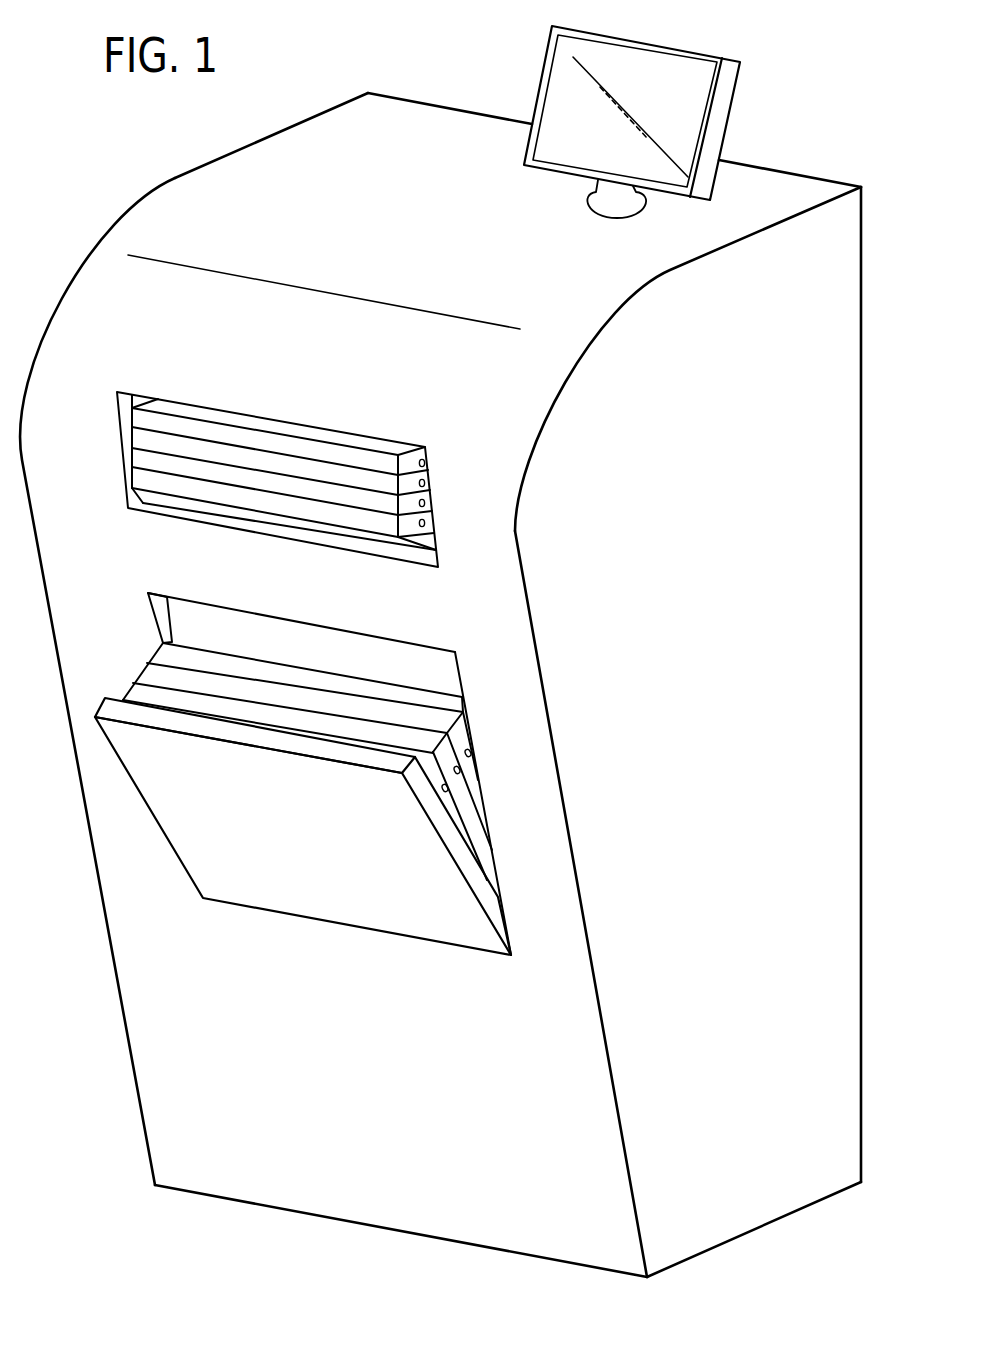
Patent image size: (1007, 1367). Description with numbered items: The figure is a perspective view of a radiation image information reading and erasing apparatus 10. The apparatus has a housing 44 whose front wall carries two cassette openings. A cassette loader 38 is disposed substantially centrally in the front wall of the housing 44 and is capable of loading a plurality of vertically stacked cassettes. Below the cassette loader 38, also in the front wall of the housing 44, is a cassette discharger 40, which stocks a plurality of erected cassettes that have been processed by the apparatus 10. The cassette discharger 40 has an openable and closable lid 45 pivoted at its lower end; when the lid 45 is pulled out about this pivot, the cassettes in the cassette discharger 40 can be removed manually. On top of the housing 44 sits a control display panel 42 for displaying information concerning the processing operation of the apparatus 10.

The radiation image information reading and erasing apparatus 10 is at (462, 28).
The cassette loader 38 is at (277, 454).
The cassette discharger 40 is at (303, 774).
The control display panel 42 is at (563, 158).
The housing 44 is at (838, 267).
The lid 45 is at (188, 848).